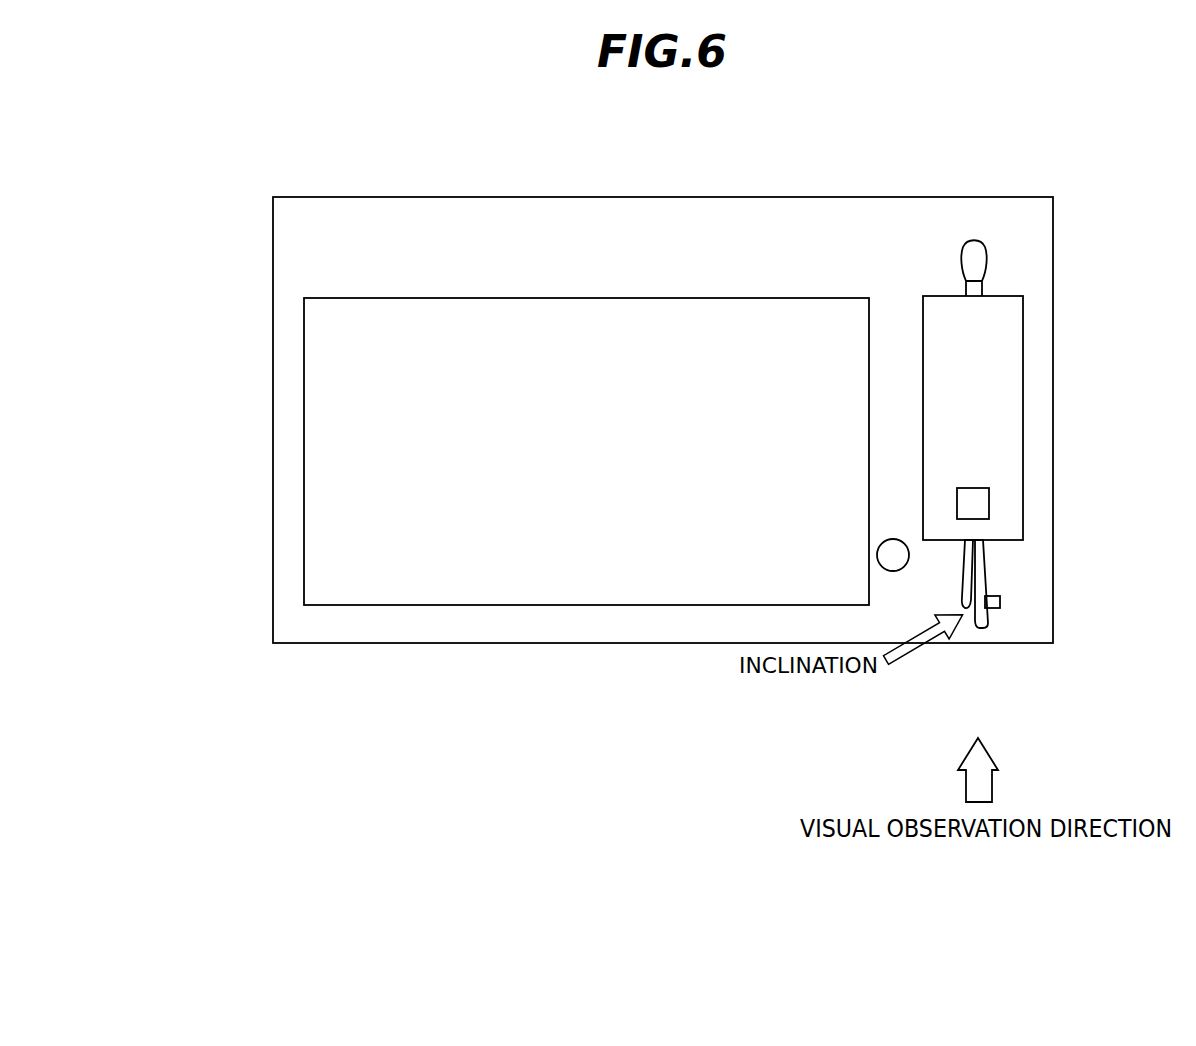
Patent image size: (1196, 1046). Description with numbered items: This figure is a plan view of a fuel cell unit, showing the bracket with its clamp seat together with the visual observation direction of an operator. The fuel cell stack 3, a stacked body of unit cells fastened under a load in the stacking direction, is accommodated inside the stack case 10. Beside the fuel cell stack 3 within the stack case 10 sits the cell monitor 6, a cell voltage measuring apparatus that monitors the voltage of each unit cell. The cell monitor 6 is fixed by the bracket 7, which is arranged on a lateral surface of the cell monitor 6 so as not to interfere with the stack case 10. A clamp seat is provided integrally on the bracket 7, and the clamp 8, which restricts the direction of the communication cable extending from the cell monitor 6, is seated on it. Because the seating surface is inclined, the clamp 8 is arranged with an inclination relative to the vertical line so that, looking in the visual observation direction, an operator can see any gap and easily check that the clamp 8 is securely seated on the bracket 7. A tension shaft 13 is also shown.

The stack case 10 is at (788, 197).
The fuel cell stack 3 is at (355, 447).
The cell monitor 6 is at (997, 368).
The bracket 7 is at (987, 587).
The clamp 8 is at (972, 607).
The tension shaft 13 is at (877, 560).